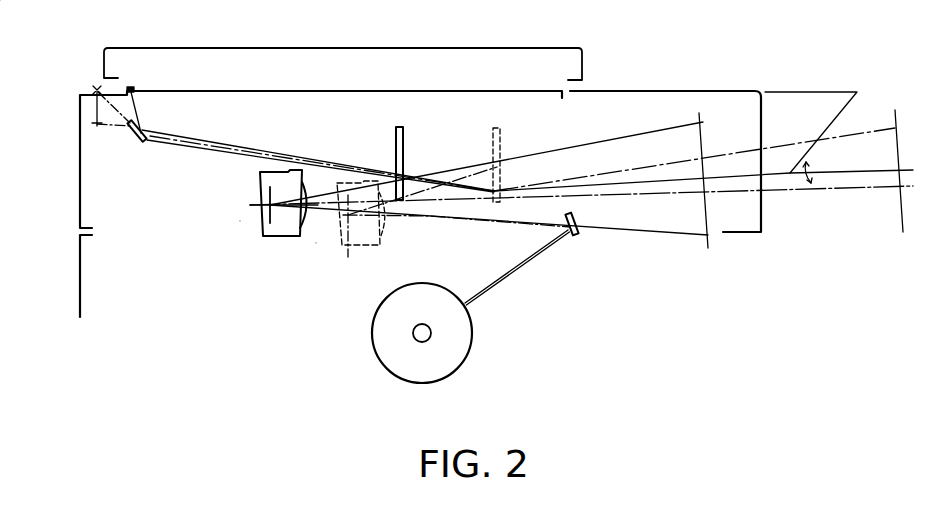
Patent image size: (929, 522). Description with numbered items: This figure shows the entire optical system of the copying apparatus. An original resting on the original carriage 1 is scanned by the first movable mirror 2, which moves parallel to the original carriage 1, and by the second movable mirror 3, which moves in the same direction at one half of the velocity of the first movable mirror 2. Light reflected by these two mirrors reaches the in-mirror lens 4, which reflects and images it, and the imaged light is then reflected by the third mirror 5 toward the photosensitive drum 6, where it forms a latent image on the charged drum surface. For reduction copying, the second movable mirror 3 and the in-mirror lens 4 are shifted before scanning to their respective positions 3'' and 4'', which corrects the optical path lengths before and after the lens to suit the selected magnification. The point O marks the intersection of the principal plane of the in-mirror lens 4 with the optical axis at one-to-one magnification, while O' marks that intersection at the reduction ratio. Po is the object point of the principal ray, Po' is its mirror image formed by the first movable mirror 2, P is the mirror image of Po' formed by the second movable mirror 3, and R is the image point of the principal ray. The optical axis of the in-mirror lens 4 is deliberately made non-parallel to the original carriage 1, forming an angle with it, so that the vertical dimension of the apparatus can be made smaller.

The original carriage 1 is at (268, 91).
The first movable mirror 2 is at (139, 140).
The second movable mirror 3 is at (414, 158).
The position of second movable mirror during reduction 3'' is at (516, 155).
The in-mirror lens 4 is at (284, 223).
The position of in-mirror lens during reduction 4'' is at (453, 233).
The third mirror 5 is at (575, 236).
The photosensitive drum 6 is at (472, 338).
The object point of the principal ray Po is at (152, 97).
The mirror image of Po by the first movable mirror Po' is at (84, 113).
The intersection of principal plane and optical axis at one-to-one magnification O is at (247, 221).
The intersection of principal plane and optical axis at reduction O' is at (324, 237).
The mirror image of Po' by the second movable mirror P is at (706, 124).
The image point of the principal ray R is at (710, 236).